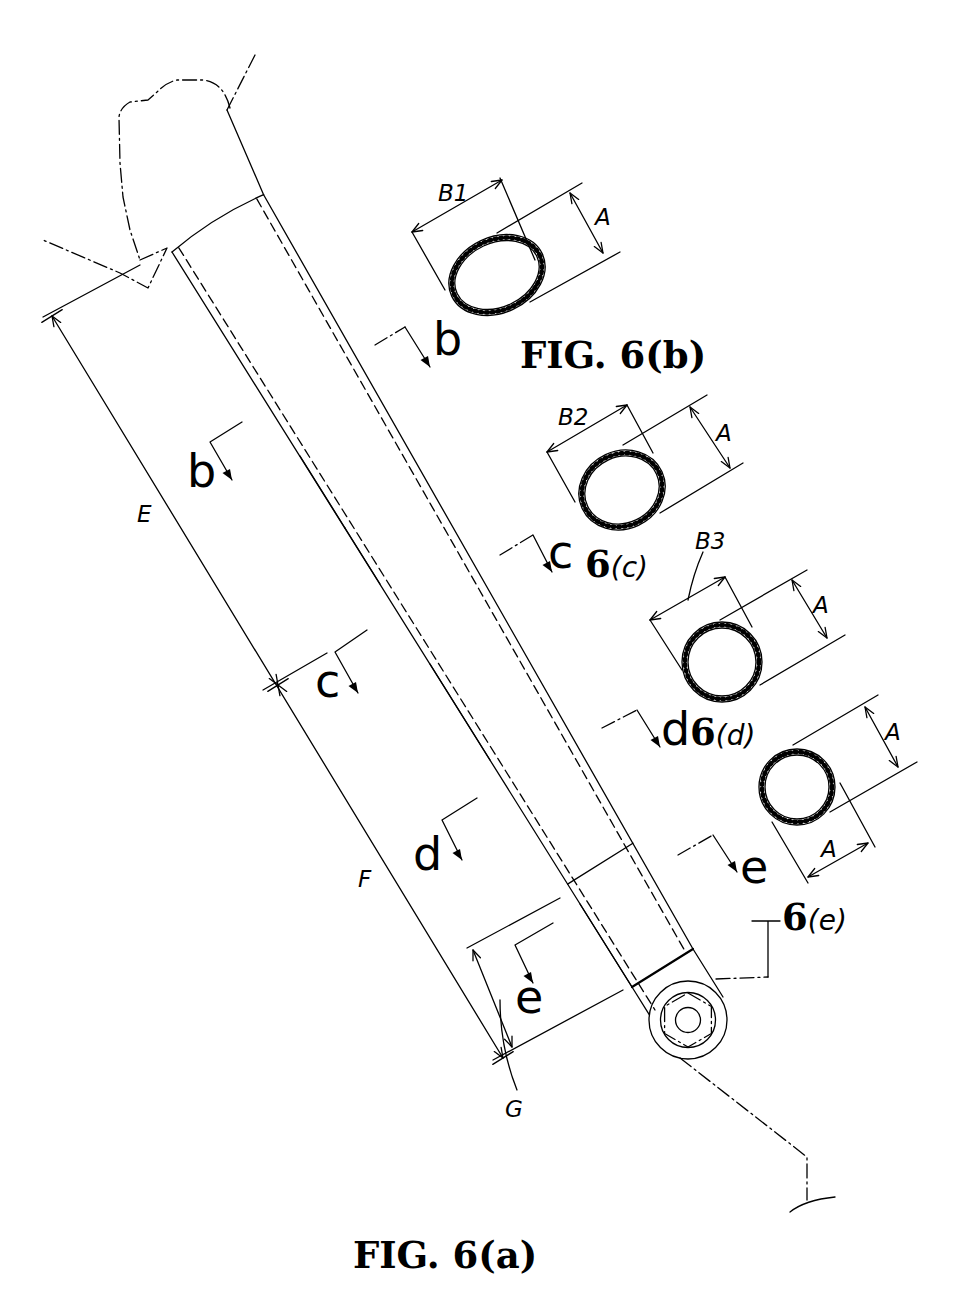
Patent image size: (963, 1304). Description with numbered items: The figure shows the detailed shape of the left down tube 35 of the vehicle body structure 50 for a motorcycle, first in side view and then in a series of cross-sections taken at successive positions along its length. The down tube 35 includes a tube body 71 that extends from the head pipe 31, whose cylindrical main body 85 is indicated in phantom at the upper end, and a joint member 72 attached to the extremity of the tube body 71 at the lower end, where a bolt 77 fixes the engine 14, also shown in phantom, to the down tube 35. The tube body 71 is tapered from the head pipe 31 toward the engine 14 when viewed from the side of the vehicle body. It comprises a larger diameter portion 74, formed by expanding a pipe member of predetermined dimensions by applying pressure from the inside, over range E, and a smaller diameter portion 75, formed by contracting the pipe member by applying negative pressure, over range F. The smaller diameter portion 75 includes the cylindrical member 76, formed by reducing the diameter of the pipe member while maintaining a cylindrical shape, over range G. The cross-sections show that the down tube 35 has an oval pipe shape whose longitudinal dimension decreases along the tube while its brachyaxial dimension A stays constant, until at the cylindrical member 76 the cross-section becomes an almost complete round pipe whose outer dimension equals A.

The engine 14 is at (727, 1108).
The head pipe 31 is at (272, 113).
The left down tube 35 is at (277, 795).
The vehicle body structure 50 is at (405, 92).
The tube body 71 is at (371, 537).
The joint member 72 is at (640, 1007).
The larger diameter portion 74 is at (342, 466).
The smaller diameter portion 75 is at (483, 690).
The cylindrical member 76 is at (628, 942).
The bolt 77 is at (668, 1047).
The cylindrical main body 85 is at (253, 165).